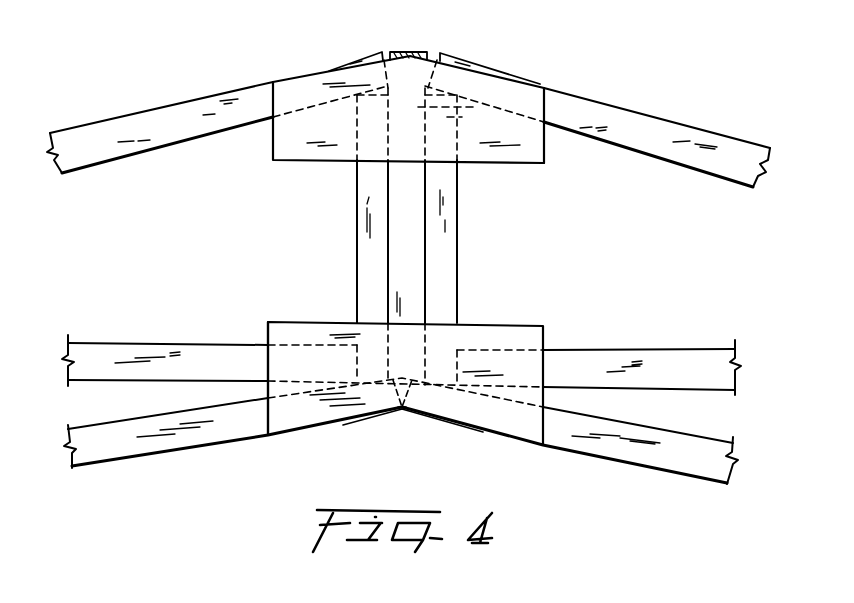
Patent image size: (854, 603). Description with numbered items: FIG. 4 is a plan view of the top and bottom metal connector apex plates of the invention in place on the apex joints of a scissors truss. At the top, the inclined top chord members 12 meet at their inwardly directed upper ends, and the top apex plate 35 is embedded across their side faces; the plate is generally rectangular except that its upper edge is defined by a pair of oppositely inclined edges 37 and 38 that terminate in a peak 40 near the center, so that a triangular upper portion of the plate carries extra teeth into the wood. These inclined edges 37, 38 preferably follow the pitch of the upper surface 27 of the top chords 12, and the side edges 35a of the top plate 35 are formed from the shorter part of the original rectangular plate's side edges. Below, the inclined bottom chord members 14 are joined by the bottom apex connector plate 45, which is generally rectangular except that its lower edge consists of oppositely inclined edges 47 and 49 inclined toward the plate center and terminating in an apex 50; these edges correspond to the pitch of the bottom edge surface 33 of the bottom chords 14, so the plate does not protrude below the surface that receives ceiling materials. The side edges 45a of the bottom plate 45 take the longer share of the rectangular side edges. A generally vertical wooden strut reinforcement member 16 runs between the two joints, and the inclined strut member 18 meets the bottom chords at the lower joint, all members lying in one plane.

The top chord members 12 is at (133, 147).
The bottom chord members 14 is at (132, 447).
The vertical wooden strut reinforcement member 16 is at (413, 242).
The inclined wooden strut reinforcement member 18 is at (653, 360).
The upper surface of rafter 27 is at (628, 112).
The bottom edge surface 33 is at (233, 444).
The top apex plate 35 is at (318, 171).
The side edges of the top plate 35a is at (544, 164).
The inclined edge 37 is at (330, 68).
The inclined edge 38 is at (480, 70).
The peak 40 is at (414, 55).
The bottom apex connector plate 45 is at (321, 325).
The side edges of the bottom plate 45a is at (268, 351).
The lower inclined edge 47 is at (343, 426).
The lower inclined edge 49 is at (482, 433).
The apex 50 is at (403, 410).